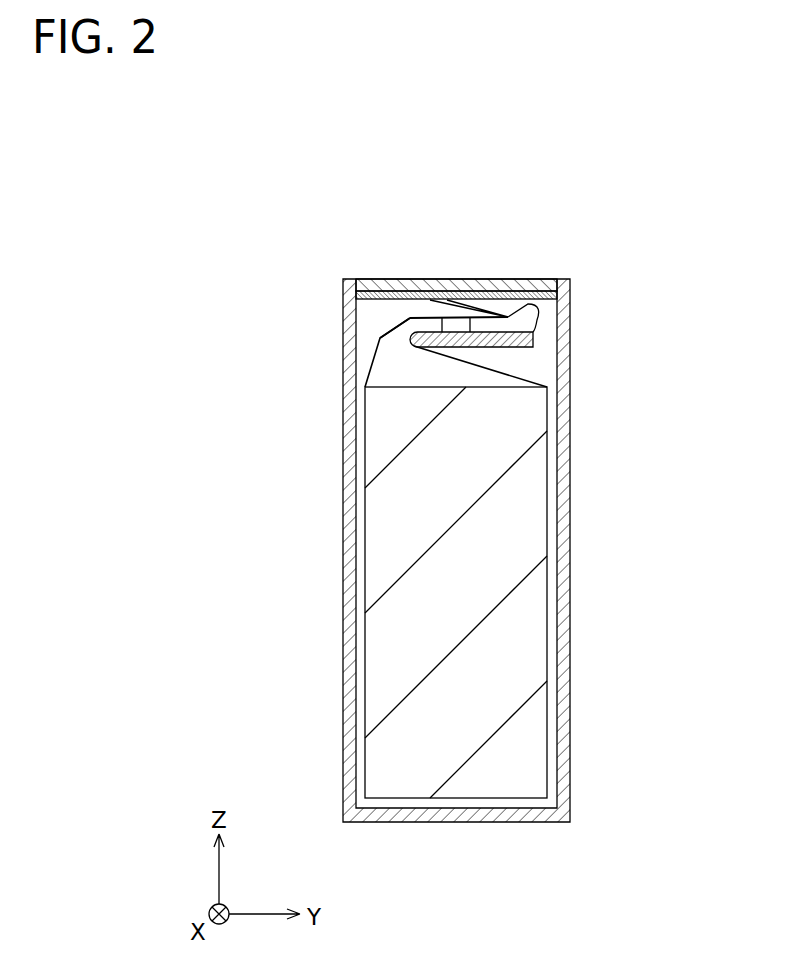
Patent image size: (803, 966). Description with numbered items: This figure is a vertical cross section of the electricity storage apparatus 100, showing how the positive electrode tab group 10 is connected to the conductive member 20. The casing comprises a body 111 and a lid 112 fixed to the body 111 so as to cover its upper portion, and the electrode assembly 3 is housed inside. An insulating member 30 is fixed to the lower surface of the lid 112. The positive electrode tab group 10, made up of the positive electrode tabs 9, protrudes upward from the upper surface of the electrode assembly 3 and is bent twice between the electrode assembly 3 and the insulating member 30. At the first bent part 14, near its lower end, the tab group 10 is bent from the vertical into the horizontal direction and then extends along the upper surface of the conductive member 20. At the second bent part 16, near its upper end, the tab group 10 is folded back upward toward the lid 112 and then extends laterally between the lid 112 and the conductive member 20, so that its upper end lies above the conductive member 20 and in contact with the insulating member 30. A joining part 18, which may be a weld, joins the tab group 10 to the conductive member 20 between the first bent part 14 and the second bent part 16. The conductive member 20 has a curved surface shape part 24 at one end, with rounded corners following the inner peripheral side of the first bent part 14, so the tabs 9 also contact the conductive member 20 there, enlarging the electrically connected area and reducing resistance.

The electricity storage apparatus 100 is at (607, 226).
The body 111 is at (570, 467).
The lid 112 is at (473, 279).
The insulating member 30 is at (525, 290).
The electrode assembly 3 is at (530, 518).
The positive electrode tab group 10 is at (383, 373).
The positive electrode tabs 9 is at (456, 352).
The first bent part 14 is at (408, 319).
The curved surface shape part 24 is at (408, 338).
The joining part 18 is at (457, 322).
The second bent part 16 is at (537, 314).
The conductive member 20 is at (535, 342).